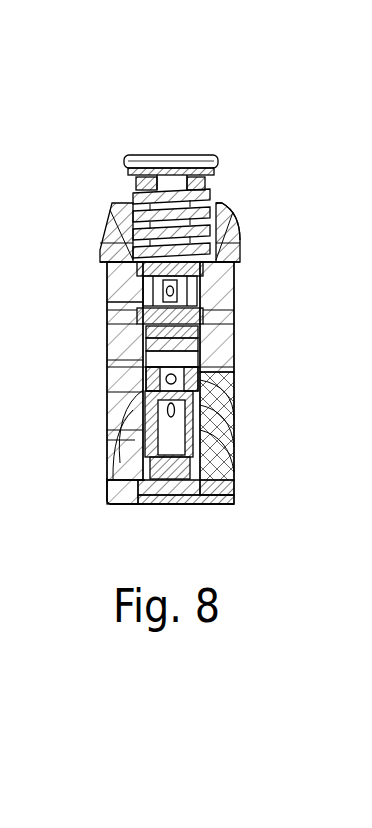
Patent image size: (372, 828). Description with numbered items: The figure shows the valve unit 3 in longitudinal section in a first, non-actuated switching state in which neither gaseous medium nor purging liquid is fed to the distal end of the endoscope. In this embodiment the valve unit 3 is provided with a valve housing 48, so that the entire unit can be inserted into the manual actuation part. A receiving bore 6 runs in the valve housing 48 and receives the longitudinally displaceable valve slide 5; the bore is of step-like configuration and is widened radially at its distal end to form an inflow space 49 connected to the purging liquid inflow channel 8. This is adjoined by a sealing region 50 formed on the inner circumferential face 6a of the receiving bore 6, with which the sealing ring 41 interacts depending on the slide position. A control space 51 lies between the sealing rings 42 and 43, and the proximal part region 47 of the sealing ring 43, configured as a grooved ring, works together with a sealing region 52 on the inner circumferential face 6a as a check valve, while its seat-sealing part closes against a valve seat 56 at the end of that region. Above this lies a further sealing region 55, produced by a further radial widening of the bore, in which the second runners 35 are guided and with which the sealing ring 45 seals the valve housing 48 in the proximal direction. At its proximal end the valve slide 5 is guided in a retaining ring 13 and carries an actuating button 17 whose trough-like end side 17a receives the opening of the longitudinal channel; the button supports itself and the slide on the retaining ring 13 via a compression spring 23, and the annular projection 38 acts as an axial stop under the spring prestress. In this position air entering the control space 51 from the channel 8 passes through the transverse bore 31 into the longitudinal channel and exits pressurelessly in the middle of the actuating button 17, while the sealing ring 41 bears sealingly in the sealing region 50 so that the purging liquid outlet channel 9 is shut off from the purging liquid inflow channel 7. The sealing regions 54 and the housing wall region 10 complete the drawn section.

The valve unit 3 is at (243, 293).
The valve slide 5 is at (232, 455).
The receiving bore 6 is at (218, 303).
The inner circumferential face 6a is at (232, 480).
The purging liquid inflow channel 7 is at (209, 506).
The purging liquid inflow channel / air inlet channel 8 is at (230, 362).
The purging liquid outlet channel 9 is at (108, 468).
The housing 10 is at (108, 320).
The retaining ring 13 is at (216, 215).
The actuating button 17 is at (188, 155).
The end side 17a is at (157, 153).
The compression spring 23 is at (132, 191).
The transverse bore 31 is at (230, 425).
The second runners 35 is at (224, 280).
The annular projection 38 is at (100, 243).
The sealing ring 41 is at (127, 505).
The sealing ring 42 is at (133, 397).
The sealing ring 43 is at (120, 347).
The sealing ring 45 is at (220, 245).
The proximal part region 47 is at (232, 322).
The valve housing 48 is at (236, 322).
The inflow space 49 is at (158, 506).
The sealing region 50 is at (232, 500).
The control space 51 is at (130, 370).
The sealing region 52 is at (130, 423).
The seal ring 54 is at (238, 350).
The sealing region 55 is at (120, 283).
The valve seat 56 is at (223, 387).